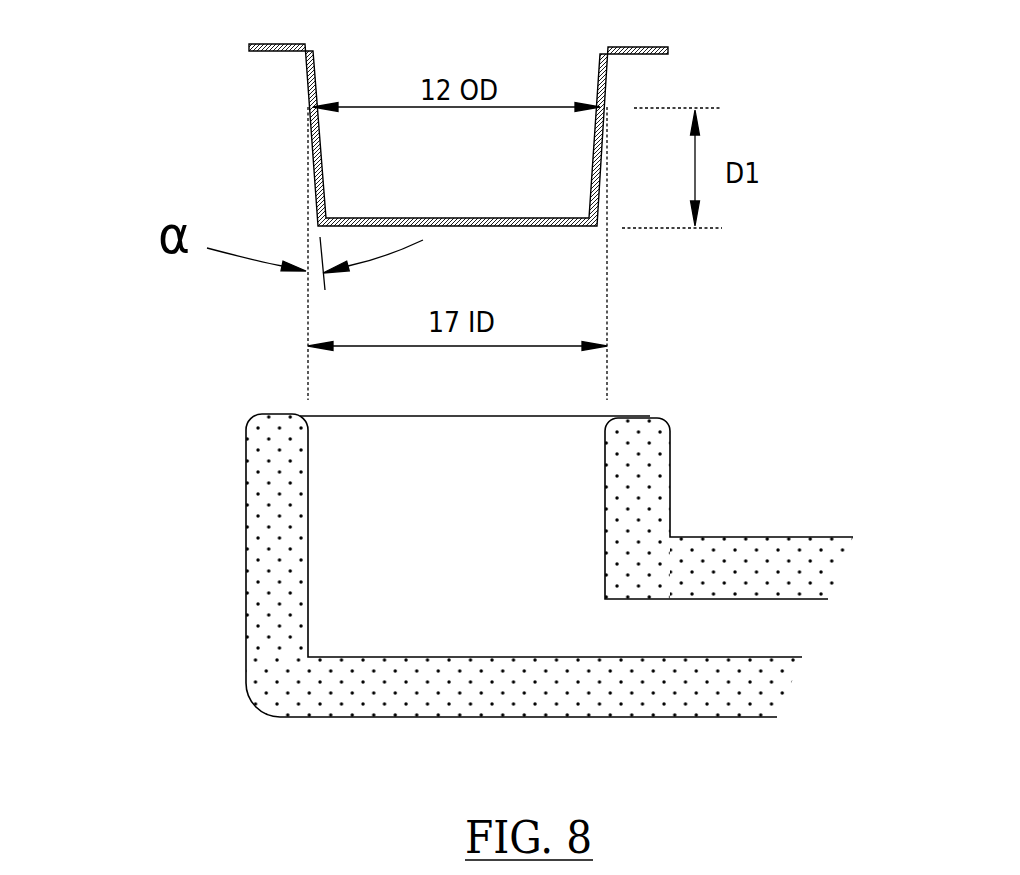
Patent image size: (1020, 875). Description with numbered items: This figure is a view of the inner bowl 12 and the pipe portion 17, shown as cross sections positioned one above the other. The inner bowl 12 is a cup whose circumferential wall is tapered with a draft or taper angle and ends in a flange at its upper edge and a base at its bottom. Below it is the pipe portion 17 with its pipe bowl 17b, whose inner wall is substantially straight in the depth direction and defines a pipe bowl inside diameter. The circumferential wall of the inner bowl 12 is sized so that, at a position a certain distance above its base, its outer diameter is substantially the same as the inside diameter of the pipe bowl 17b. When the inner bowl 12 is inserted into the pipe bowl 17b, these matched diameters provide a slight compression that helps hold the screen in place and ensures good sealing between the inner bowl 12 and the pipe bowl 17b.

The inner bowl 12 is at (308, 83).
The pipe portion 17 is at (776, 536).
The pipe bowl 17b is at (440, 528).